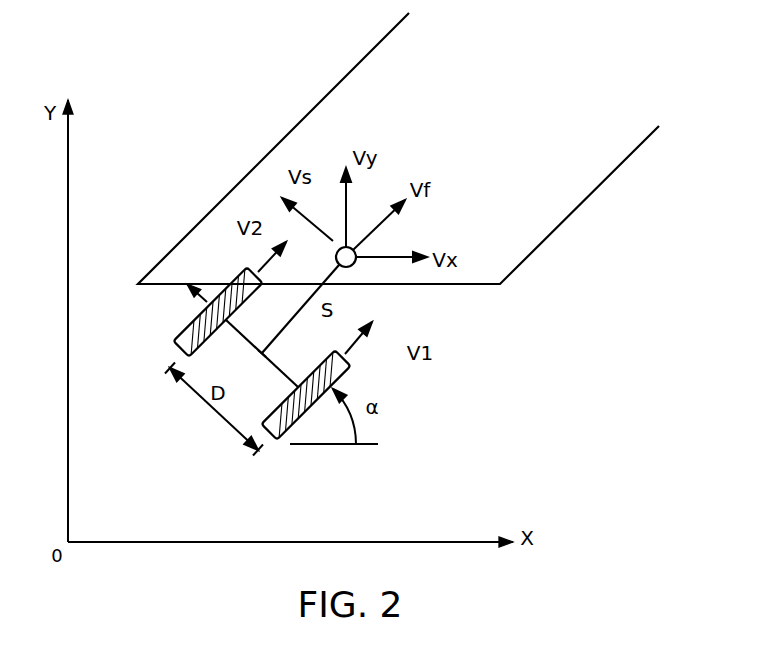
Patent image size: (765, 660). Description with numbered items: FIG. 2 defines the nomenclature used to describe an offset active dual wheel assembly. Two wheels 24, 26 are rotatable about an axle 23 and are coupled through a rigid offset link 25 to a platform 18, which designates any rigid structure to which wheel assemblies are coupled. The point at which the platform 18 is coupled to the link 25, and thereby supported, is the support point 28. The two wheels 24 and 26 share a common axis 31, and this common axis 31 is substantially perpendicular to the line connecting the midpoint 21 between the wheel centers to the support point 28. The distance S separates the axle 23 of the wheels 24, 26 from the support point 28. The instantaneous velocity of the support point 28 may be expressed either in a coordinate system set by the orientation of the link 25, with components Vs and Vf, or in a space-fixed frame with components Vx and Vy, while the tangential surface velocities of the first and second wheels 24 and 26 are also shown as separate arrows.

The platform 18 is at (486, 77).
The midpoint 21 is at (263, 353).
The axle 23 is at (278, 369).
The wheel 24 is at (176, 347).
The rigid offset link 25 is at (285, 327).
The wheel 26 is at (278, 444).
The support point 28 is at (355, 251).
The common axis 31 is at (205, 307).